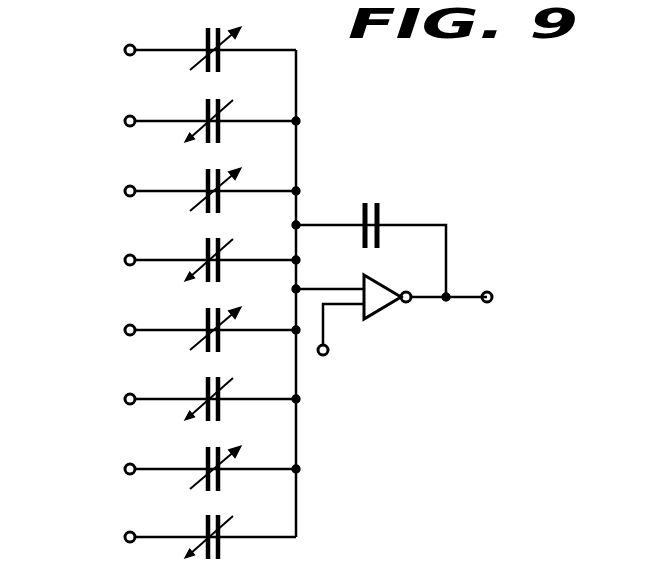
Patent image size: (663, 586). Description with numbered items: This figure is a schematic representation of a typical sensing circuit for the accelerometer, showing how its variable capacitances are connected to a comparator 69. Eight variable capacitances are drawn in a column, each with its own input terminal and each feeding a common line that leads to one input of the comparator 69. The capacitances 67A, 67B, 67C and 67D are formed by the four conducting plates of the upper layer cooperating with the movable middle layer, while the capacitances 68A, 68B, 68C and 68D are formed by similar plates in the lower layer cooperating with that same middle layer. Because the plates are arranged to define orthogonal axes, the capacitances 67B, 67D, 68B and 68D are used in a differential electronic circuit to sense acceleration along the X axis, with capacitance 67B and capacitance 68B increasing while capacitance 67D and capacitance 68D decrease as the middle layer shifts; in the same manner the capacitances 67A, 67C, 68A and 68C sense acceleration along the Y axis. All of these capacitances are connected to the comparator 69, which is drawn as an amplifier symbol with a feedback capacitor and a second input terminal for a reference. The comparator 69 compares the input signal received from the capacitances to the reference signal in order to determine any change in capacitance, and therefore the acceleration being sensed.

The capacitance 67A is at (123, 48).
The capacitance 68A is at (123, 119).
The capacitance 67B is at (123, 189).
The capacitance 68B is at (123, 258).
The capacitance 67C is at (123, 328).
The capacitance 68C is at (123, 397).
The capacitance 67D is at (123, 467).
The capacitance 68D is at (123, 535).
The comparator 69 is at (383, 313).